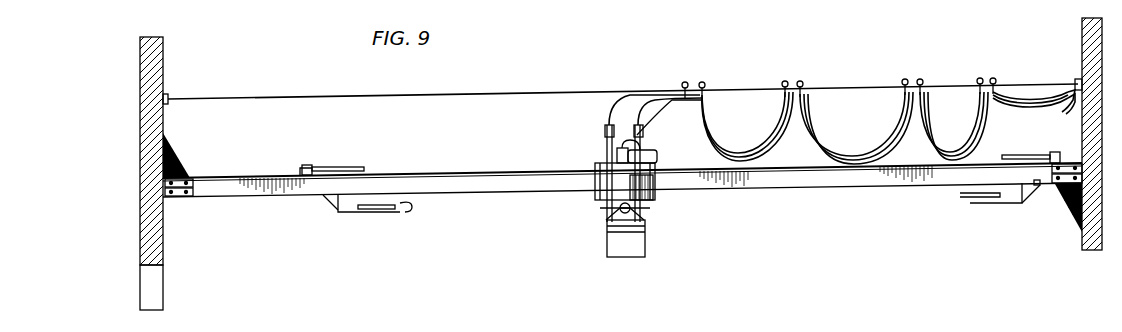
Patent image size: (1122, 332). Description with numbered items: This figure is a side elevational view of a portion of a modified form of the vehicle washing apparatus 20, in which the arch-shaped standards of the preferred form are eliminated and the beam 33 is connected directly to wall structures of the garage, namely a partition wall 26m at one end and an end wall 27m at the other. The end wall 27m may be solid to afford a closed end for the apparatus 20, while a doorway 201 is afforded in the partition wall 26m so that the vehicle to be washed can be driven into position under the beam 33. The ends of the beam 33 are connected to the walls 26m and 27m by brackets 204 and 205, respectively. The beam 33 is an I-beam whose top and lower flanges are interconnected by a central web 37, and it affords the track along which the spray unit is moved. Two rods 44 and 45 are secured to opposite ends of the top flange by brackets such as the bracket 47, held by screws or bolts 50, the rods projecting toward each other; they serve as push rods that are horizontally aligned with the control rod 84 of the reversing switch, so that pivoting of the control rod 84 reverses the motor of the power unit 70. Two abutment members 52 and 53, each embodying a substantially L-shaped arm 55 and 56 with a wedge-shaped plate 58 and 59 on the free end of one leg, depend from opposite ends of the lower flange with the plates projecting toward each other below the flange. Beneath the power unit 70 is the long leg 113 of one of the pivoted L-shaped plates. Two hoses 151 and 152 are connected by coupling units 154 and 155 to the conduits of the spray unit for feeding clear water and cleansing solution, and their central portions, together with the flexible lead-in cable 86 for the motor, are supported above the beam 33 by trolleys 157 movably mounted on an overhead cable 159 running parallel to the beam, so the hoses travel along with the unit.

The apparatus 20 is at (836, 106).
The partition wall 26m is at (164, 61).
The end wall 27m is at (1081, 42).
The beam 33 is at (240, 176).
The central web 37 is at (530, 184).
The rod 44 is at (341, 167).
The rod 45 is at (1022, 155).
The bracket 47 is at (302, 168).
The bolt 50 is at (310, 166).
The abutment member 52 is at (372, 211).
The abutment member 53 is at (1010, 205).
The L-shaped arm 55 is at (327, 205).
The L-shaped arm 56 is at (1037, 198).
The wedge-shaped plate 58 is at (410, 219).
The wedge-shaped plate 59 is at (962, 198).
The power unit 70 is at (657, 196).
The control rod 84 is at (652, 155).
The flexible cable 86 is at (655, 122).
The long leg 113 is at (600, 209).
The hose 151 is at (606, 115).
The hose 152 is at (756, 132).
The coupling unit 154 is at (604, 140).
The coupling unit 155 is at (648, 222).
The trolley 157 is at (701, 86).
The festoon wire 159 is at (555, 93).
The doorway 201 is at (160, 296).
The bracket 204 is at (177, 149).
The bracket 205 is at (1070, 203).